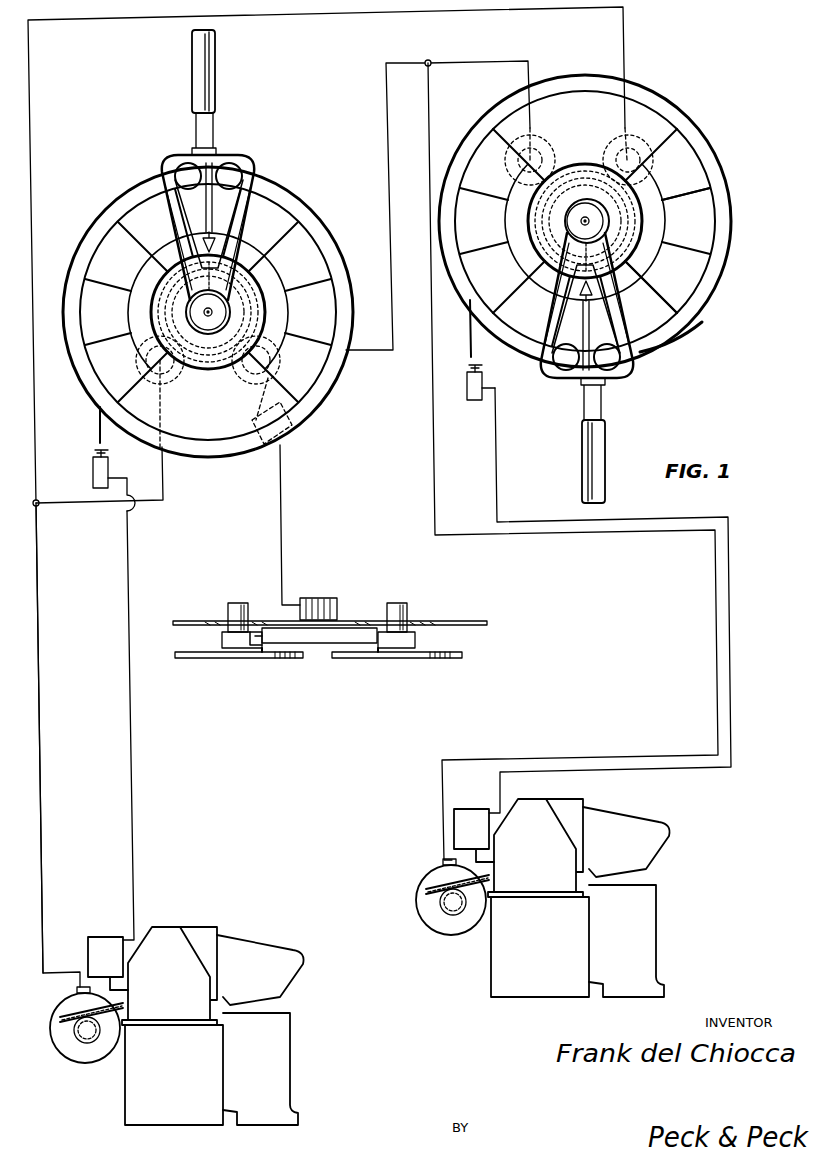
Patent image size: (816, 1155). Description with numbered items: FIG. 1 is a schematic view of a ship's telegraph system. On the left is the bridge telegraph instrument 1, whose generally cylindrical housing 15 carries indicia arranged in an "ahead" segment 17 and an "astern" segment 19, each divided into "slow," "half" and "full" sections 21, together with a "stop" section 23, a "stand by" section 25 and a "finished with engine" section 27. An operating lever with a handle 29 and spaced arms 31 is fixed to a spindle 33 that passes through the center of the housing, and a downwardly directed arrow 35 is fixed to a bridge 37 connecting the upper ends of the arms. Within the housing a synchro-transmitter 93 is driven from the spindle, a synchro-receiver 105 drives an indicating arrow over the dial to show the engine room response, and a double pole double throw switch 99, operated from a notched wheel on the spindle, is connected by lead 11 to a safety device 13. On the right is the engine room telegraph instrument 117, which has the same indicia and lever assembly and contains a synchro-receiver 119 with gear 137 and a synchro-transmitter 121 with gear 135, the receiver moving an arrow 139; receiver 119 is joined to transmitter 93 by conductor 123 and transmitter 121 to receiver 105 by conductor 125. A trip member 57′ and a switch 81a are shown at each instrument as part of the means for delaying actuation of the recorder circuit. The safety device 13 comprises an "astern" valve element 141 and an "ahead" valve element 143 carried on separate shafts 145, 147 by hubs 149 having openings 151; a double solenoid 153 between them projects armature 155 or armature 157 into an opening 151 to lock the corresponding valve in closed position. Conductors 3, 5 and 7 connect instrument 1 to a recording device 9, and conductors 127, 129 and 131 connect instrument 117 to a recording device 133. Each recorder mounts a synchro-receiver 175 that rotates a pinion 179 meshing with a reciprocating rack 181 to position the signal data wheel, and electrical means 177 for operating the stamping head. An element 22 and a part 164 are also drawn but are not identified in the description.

The ship's telegraph instrument 1 is at (300, 180).
The electric conductor 3 is at (145, 503).
The electric conductor 5 is at (40, 580).
The electric conductor 7 is at (131, 650).
The recording device 9 is at (239, 924).
The lead 11 is at (281, 525).
The safety device 13 is at (329, 661).
The housing 15 is at (330, 232).
The "ahead" segment 17 is at (172, 292).
The "astern" segment 19 is at (295, 218).
The "slow," "half" and "full" sections 21 is at (80, 314).
The contact segment 22 is at (664, 345).
The "stop" section 23 is at (228, 182).
The "stand by" section 25 is at (140, 205).
The "finished with engine" section 27 is at (283, 202).
The handle 29 is at (217, 72).
The spaced arms 31 is at (167, 166).
The spindle 33 is at (214, 303).
The downwardly directed arrow 35 is at (212, 165).
The bridge 37 is at (236, 164).
The trip member 57′ is at (98, 425).
The switch 81a is at (93, 475).
The synchro-transmitter 93 is at (192, 404).
The double pole double throw switch 99 is at (293, 437).
The synchro-receiver 105 is at (240, 405).
The engine room telegraph instrument 117 is at (716, 311).
The synchro-receiver 119 is at (650, 124).
The synchro-transmitter 121 is at (549, 123).
The conductor 123 is at (398, 12).
The conductor 125 is at (388, 145).
The electrical conductor 127 is at (432, 63).
The electrical conductor 129 is at (435, 470).
The electrical conductor 131 is at (497, 490).
The recording device 133 is at (687, 820).
The gear 135 is at (556, 148).
The gear 137 is at (672, 136).
The arrow 139 is at (612, 258).
The "astern" valve 141 is at (203, 658).
The "ahead" valve 143 is at (445, 660).
The shaft 145 is at (232, 606).
The shaft 147 is at (402, 603).
The hubs 149 is at (222, 640).
The opening 151 is at (262, 652).
The double solenoid 153 is at (315, 650).
The armature 155 is at (255, 630).
The armature 157 is at (380, 655).
The arm 164 is at (262, 952).
The synchro-receiver 175 is at (85, 1072).
The electrical means 177 is at (90, 937).
The pinion 179 is at (80, 1040).
The rack 181 is at (60, 1012).